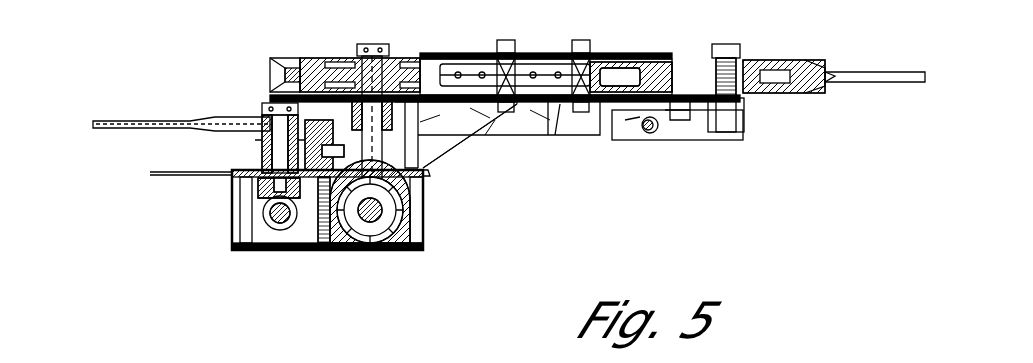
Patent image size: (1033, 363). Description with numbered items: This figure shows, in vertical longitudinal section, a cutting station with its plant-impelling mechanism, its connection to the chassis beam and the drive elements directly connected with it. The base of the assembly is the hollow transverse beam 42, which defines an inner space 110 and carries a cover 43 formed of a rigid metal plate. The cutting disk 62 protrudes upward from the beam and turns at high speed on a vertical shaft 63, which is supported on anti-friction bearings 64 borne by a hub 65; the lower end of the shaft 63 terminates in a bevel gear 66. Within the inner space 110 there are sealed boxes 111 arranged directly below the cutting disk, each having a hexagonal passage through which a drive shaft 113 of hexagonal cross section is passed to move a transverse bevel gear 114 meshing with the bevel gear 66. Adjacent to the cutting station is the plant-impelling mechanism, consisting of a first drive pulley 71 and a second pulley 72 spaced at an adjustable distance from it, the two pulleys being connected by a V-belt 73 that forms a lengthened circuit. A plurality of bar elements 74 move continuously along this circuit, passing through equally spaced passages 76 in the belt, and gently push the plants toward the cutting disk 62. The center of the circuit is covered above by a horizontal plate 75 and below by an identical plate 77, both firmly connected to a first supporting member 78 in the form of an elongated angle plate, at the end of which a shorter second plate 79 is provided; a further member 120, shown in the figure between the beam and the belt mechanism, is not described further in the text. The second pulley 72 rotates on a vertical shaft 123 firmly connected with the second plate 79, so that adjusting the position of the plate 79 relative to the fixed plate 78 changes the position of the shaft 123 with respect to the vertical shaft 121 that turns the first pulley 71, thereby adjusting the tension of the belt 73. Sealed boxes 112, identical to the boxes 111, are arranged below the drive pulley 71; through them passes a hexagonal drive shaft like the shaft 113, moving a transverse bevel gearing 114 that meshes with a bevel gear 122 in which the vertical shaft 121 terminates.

The hollow transverse beam 42 is at (232, 235).
The cover 43 is at (150, 174).
The cutting disk 62 is at (115, 121).
The vertical shaft 63 is at (262, 106).
The anti-friction bearings 64 is at (262, 150).
The hub 65 is at (320, 120).
The bevel gear 66 is at (258, 188).
The first drive pulley 71 is at (345, 58).
The second pulley 72 is at (800, 60).
The V-belt 73 is at (614, 64).
The bar elements 74 is at (870, 72).
The horizontal plate 75 is at (525, 54).
The passages 76 is at (270, 74).
The lower plate 77 is at (550, 135).
The first supporting member 78 is at (587, 135).
The second plate 79 is at (682, 140).
The inner space 110 is at (423, 237).
The sealed boxes 111 is at (322, 250).
The sealed boxes 112 is at (416, 250).
The drive shaft 113 is at (276, 250).
The transverse bevel gear 114 is at (378, 250).
The brace 120 is at (432, 125).
The vertical shaft 121 is at (372, 44).
The bevel gear 122 is at (424, 190).
The vertical shaft 123 is at (744, 100).